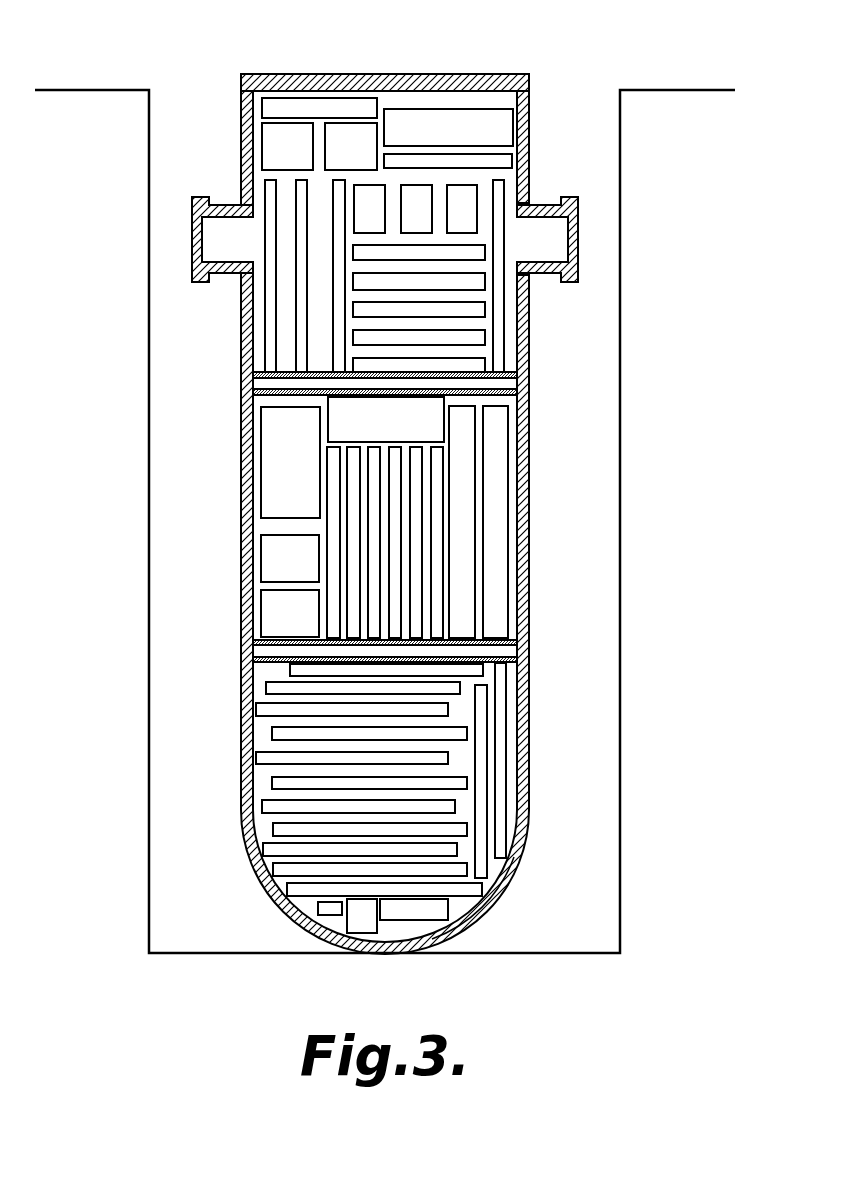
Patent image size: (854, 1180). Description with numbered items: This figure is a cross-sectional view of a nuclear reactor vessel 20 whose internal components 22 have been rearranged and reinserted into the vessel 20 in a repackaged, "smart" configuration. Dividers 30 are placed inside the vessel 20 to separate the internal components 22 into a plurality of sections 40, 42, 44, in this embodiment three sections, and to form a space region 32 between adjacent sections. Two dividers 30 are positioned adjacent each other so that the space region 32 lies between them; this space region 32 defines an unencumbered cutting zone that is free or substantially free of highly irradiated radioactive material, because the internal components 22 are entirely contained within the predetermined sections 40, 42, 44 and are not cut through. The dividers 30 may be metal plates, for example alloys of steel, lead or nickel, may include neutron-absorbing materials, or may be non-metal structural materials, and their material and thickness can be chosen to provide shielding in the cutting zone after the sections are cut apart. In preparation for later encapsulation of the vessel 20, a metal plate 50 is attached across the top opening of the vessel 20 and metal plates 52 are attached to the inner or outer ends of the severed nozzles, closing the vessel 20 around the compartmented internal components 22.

The vessel 20 is at (383, 484).
The internal components 22 is at (258, 343).
The dividers 30 is at (497, 373).
The space region 32 is at (515, 383).
The section 40 is at (460, 105).
The section 42 is at (474, 546).
The section 44 is at (474, 804).
The metal plate 50 is at (308, 73).
The metal plates 52 is at (192, 220).